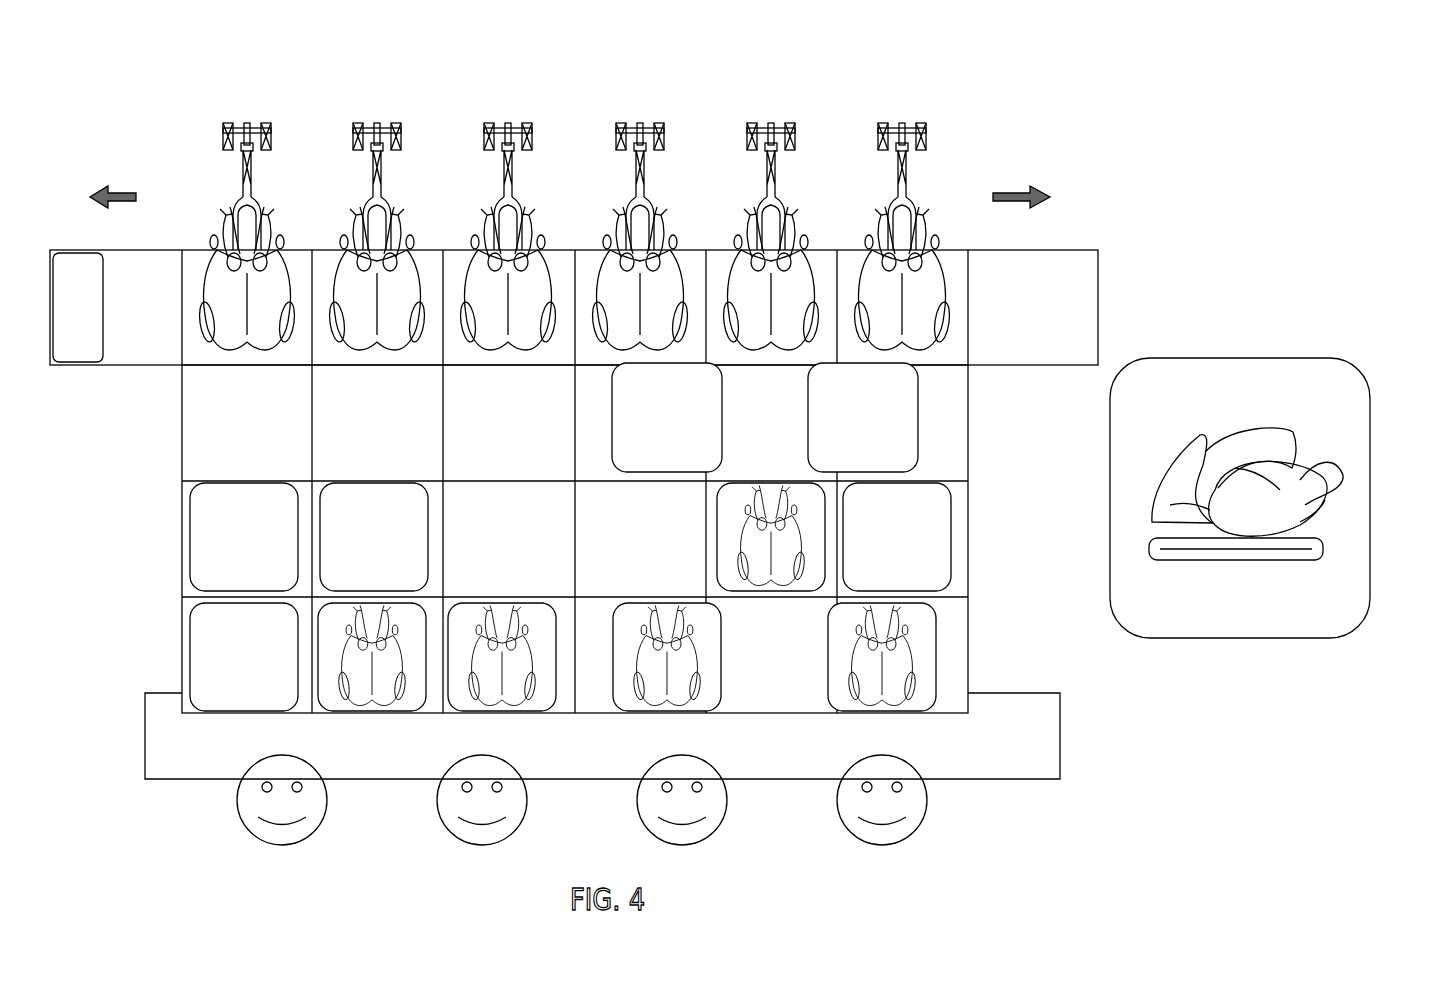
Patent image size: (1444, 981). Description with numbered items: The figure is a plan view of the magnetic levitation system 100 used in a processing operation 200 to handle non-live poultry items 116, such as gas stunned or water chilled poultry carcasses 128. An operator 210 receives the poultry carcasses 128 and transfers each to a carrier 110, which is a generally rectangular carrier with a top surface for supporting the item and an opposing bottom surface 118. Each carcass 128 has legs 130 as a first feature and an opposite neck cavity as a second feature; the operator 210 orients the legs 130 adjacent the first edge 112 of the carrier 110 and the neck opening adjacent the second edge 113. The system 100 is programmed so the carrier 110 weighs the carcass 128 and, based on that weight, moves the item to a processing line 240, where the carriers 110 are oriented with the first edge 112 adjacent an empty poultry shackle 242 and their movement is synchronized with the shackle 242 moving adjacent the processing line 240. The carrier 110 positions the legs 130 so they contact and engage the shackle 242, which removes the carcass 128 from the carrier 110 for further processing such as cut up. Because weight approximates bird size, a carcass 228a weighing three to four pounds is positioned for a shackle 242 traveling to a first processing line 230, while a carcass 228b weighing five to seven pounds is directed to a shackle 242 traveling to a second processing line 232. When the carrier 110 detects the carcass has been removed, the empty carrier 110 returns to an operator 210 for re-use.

The magnetic levitation system 100 is at (1082, 126).
The carrier 110 is at (218, 648).
The first edge 112 is at (771, 488).
The second edge 113 is at (910, 712).
The item 116 is at (668, 686).
The bottom surface 118 is at (1237, 553).
The poultry carcass 128 is at (870, 695).
The legs 130 is at (283, 238).
The processing operation 200 is at (1125, 194).
The operator 210 is at (905, 845).
The carcass 228a is at (648, 303).
The carcass 228b is at (230, 337).
The first processing line 230 is at (1004, 193).
The second processing line 232 is at (128, 188).
The processing line 240 is at (570, 98).
The poultry shackle 242 is at (250, 182).